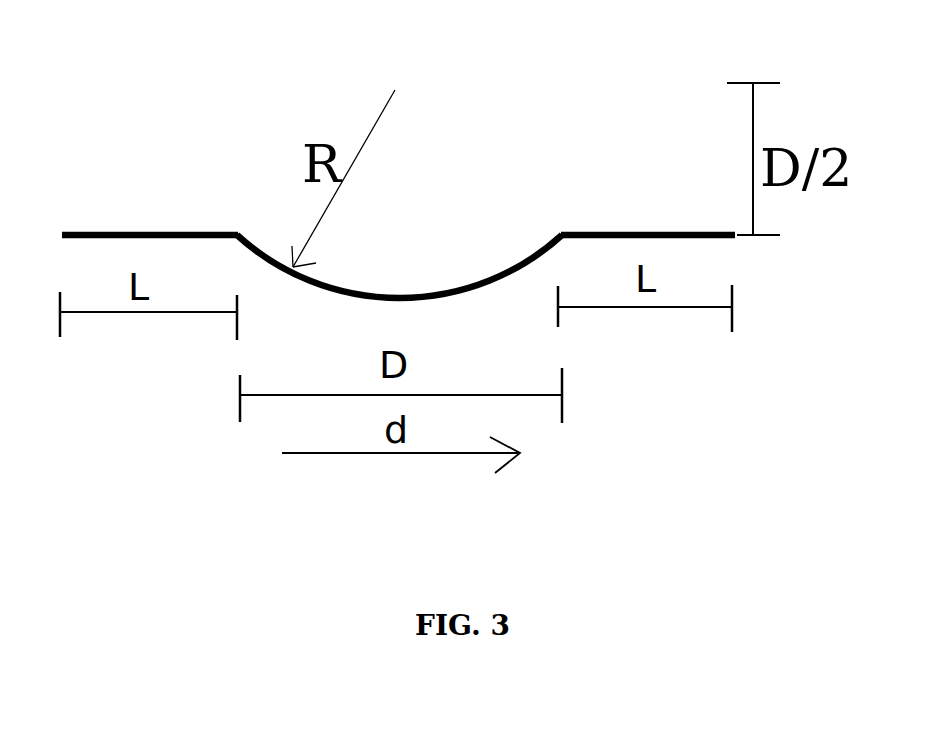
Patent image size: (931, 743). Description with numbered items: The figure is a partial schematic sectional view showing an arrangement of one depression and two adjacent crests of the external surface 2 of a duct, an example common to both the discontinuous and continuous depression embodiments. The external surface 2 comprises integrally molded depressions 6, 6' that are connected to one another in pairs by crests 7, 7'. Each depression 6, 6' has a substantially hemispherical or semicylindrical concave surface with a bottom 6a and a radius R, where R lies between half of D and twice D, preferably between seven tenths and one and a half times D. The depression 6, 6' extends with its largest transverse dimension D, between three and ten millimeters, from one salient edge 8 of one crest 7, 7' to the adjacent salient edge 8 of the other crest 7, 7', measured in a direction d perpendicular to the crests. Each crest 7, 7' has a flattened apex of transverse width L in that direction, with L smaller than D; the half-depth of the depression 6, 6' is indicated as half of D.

The external surface 2 is at (178, 178).
The crest 7 is at (150, 158).
The crest 7' is at (648, 169).
The depression 6 is at (399, 213).
The depression 6' is at (399, 266).
The bottom 6a is at (397, 294).
The salient edge 8 is at (238, 236).